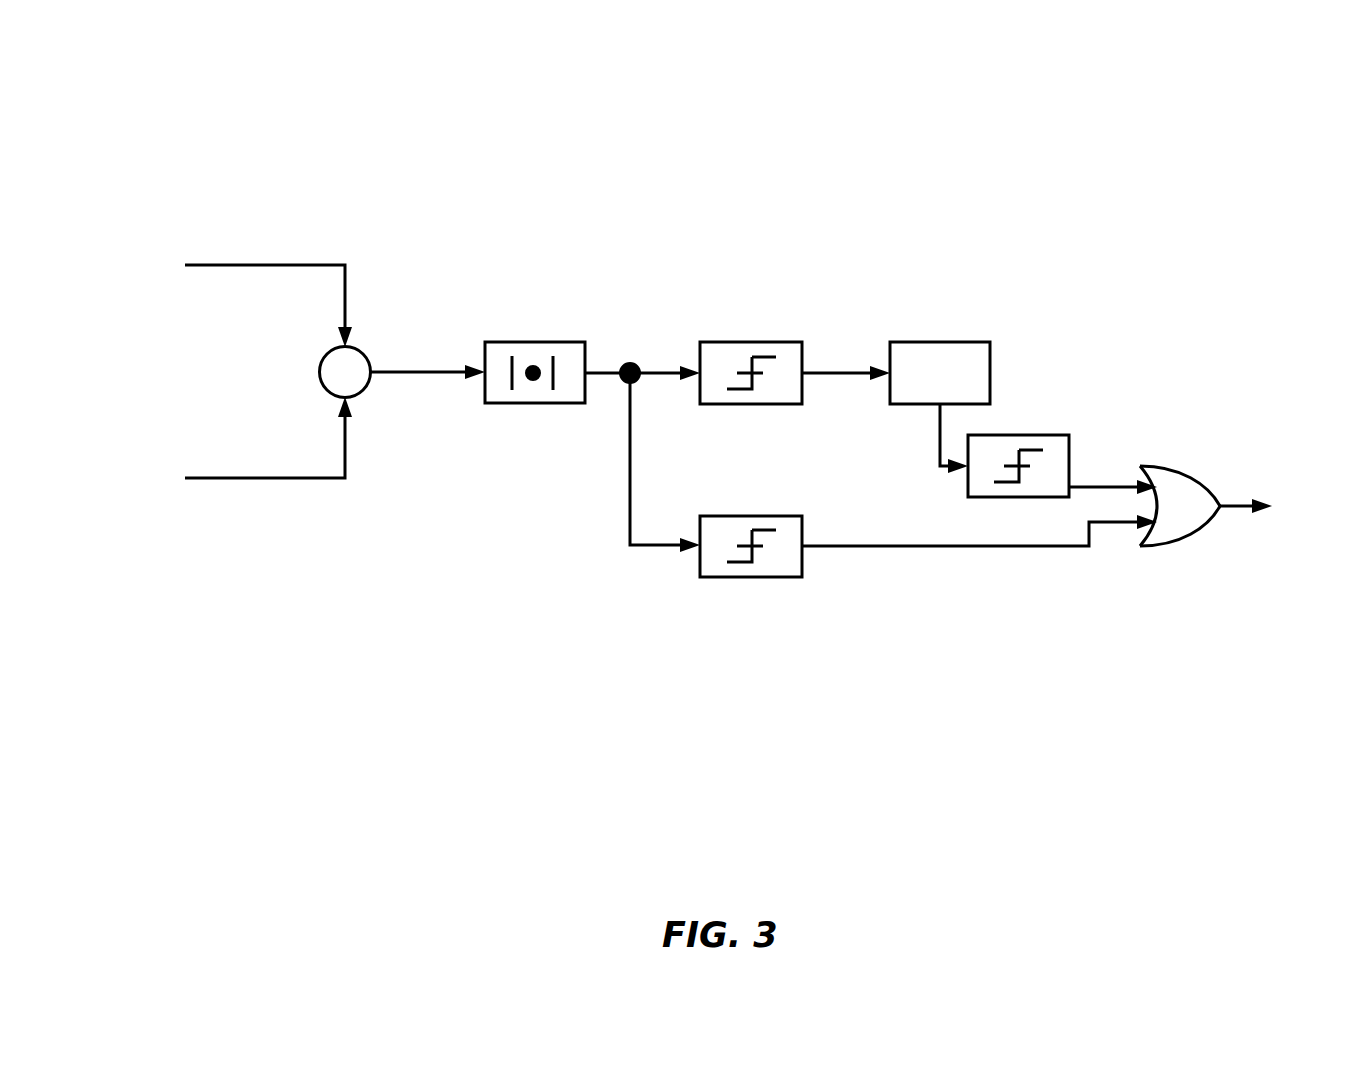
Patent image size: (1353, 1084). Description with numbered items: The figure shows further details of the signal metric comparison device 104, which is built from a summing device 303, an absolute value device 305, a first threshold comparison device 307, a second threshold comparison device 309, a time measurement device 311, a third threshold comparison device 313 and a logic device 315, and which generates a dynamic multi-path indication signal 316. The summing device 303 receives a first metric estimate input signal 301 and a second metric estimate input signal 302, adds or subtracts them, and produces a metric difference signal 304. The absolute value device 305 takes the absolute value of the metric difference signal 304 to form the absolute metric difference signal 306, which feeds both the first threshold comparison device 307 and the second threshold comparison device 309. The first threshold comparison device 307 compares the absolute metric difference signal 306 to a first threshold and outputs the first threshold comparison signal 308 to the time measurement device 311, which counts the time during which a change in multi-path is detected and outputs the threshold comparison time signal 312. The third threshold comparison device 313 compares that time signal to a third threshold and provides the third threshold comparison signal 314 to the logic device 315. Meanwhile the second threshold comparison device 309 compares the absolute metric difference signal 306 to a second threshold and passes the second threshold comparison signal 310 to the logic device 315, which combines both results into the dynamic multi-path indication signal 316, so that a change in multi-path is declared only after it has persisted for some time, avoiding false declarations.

The signal metric comparison device 104 is at (181, 112).
The first metric estimate input signal 301 is at (205, 265).
The second metric estimate input signal 302 is at (205, 478).
The summing device 303 is at (318, 372).
The metric difference signal 304 is at (397, 372).
The absolute value device 305 is at (535, 342).
The absolute metric difference signal 306 is at (610, 370).
The first threshold comparison device 307 is at (726, 342).
The first threshold comparison signal 308 is at (817, 370).
The second threshold comparison device 309 is at (751, 516).
The second threshold comparison signal 310 is at (830, 550).
The time measurement device 311 is at (940, 342).
The threshold comparison time signal 312 is at (932, 425).
The third threshold comparison device 313 is at (1018, 435).
The third threshold comparison signal 314 is at (1080, 485).
The logic device 315 is at (1185, 467).
The dynamic multi-path indication signal 316 is at (1237, 515).